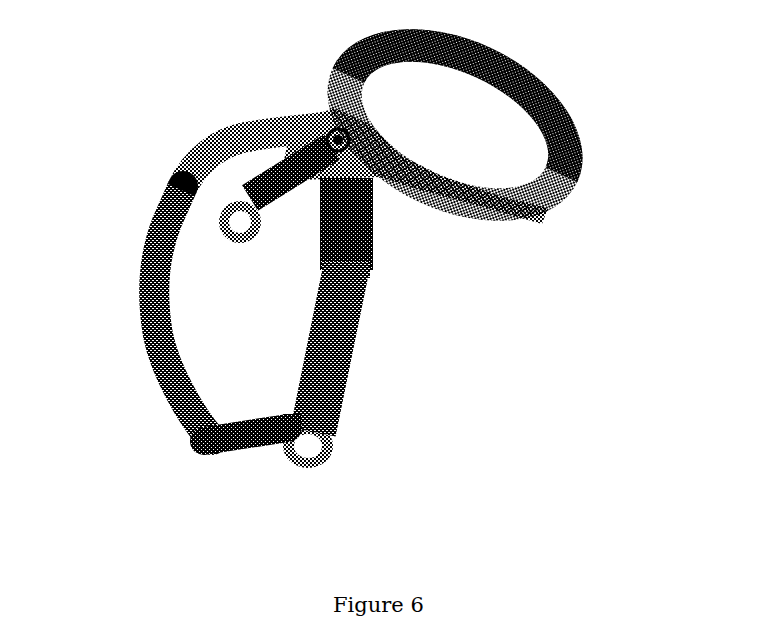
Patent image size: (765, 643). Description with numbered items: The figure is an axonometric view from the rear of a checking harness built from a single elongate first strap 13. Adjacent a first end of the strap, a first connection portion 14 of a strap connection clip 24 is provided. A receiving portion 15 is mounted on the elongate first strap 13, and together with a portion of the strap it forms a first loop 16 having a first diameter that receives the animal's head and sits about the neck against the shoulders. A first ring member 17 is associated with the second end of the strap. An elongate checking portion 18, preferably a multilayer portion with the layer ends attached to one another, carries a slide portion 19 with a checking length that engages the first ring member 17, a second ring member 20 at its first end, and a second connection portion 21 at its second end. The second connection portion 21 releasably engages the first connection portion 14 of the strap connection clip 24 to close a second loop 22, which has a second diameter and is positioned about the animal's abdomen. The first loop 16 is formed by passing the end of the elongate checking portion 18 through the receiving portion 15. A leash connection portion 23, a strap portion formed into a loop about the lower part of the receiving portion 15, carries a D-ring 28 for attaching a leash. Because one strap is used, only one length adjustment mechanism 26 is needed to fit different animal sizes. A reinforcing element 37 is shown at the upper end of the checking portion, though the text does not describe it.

The elongate first strap 13 is at (465, 129).
The first connection portion 14 is at (373, 228).
The receiving portion 15 is at (336, 128).
The first loop 16 is at (428, 89).
The first ring member 17 is at (289, 424).
The elongate checking portion 18 is at (320, 344).
The slide portion 19 is at (386, 272).
The second ring member 20 is at (306, 468).
The second connection portion 21 is at (376, 199).
The second loop 22 is at (193, 264).
The leash connection portion 23 is at (294, 164).
The strap connection clip 24 is at (314, 237).
The length adjustment mechanism 26 is at (204, 450).
The D-ring 28 is at (229, 238).
The junction 37 is at (370, 276).